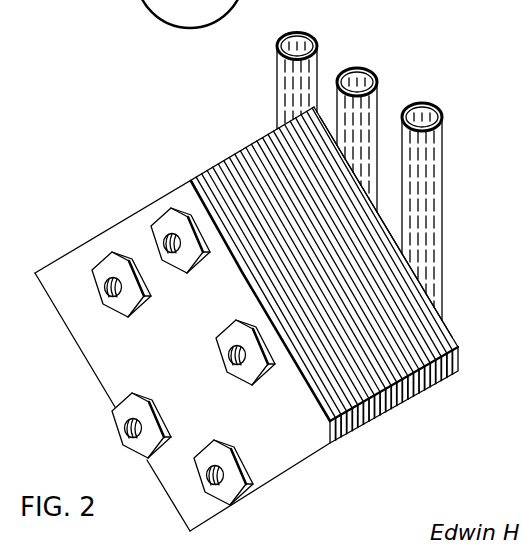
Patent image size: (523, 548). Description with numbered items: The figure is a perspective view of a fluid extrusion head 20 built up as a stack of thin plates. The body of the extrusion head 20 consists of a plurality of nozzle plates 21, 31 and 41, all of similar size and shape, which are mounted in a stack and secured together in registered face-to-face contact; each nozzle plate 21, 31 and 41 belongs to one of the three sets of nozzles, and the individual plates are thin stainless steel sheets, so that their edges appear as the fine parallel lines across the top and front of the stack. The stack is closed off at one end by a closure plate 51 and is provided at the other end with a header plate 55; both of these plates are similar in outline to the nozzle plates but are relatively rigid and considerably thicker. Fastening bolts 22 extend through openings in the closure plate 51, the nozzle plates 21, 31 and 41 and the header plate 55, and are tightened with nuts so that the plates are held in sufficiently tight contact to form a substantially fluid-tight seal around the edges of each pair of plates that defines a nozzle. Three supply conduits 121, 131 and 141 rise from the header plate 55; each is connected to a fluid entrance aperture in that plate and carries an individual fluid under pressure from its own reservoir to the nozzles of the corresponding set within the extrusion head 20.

The extrusion head 20 is at (233, 143).
The closure plate 51 is at (205, 192).
The fastening bolts 22 is at (232, 338).
The header plate 55 is at (433, 326).
The nozzle plate 21 is at (348, 437).
The nozzle plate 31 is at (353, 440).
The nozzle plate 41 is at (358, 443).
The supply conduit 121 is at (297, 33).
The supply conduit 131 is at (359, 68).
The supply conduit 141 is at (430, 103).